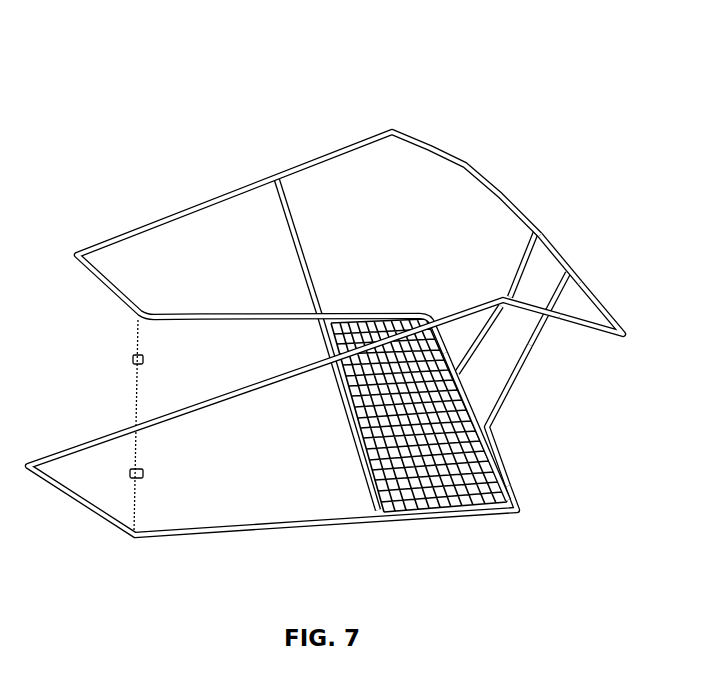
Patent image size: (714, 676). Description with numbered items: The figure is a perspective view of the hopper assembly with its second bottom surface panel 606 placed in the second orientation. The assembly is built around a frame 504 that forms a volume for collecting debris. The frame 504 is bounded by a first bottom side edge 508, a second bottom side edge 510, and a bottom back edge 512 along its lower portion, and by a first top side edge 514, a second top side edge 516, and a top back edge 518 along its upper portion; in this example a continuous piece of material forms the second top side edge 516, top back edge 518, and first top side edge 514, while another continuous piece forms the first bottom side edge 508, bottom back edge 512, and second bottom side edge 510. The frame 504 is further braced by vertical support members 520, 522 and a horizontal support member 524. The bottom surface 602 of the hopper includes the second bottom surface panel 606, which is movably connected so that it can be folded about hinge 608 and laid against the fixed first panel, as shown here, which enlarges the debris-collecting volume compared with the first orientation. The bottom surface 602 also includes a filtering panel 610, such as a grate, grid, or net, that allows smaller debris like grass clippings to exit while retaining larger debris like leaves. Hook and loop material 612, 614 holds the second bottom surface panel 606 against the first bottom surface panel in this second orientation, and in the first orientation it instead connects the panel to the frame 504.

The frame 504 is at (486, 128).
The first bottom side edge 508 is at (233, 530).
The second bottom side edge 510 is at (246, 318).
The bottom back edge 512 is at (513, 472).
The first top side edge 514 is at (590, 335).
The second top side edge 516 is at (418, 139).
The top back edge 518 is at (552, 252).
The vertical support member 520 is at (531, 349).
The vertical support member 522 is at (520, 273).
The horizontal support member 524 is at (305, 243).
The bottom surface 602 is at (345, 507).
The second bottom surface panel 606 is at (183, 503).
The hinge 608 is at (383, 520).
The filtering panel 610 is at (478, 497).
The hook and loop material 612 is at (130, 474).
The hook and loop material 614 is at (133, 360).